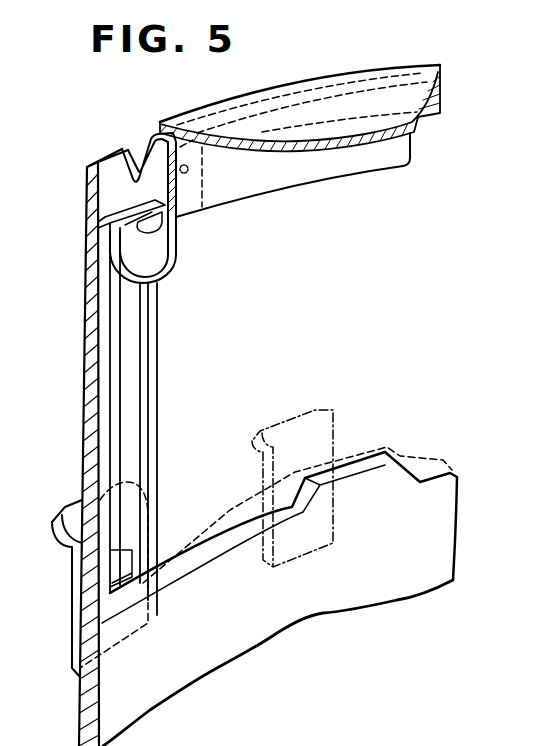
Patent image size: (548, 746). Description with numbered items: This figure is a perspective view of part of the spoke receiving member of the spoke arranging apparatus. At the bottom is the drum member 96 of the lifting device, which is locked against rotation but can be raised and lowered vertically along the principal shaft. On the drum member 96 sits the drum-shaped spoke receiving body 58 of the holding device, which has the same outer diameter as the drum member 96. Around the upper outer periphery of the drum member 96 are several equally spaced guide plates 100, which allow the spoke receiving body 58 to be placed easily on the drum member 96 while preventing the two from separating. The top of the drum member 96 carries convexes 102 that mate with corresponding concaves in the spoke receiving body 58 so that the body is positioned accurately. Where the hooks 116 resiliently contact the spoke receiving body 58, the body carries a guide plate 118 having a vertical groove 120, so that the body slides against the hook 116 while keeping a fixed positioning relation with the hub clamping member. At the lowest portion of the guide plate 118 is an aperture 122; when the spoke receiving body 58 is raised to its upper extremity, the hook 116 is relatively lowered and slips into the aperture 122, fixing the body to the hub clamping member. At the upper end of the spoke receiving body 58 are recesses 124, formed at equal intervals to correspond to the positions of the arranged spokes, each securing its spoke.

The spoke receiving body 58 is at (87, 212).
The recess 124 is at (142, 152).
The hook 116 is at (188, 256).
The guide plate 118 is at (152, 365).
The vertical groove 120 is at (138, 405).
The guide plate 100 is at (70, 505).
The aperture 122 is at (146, 588).
The convex 102 is at (388, 476).
The drum member 96 is at (447, 503).